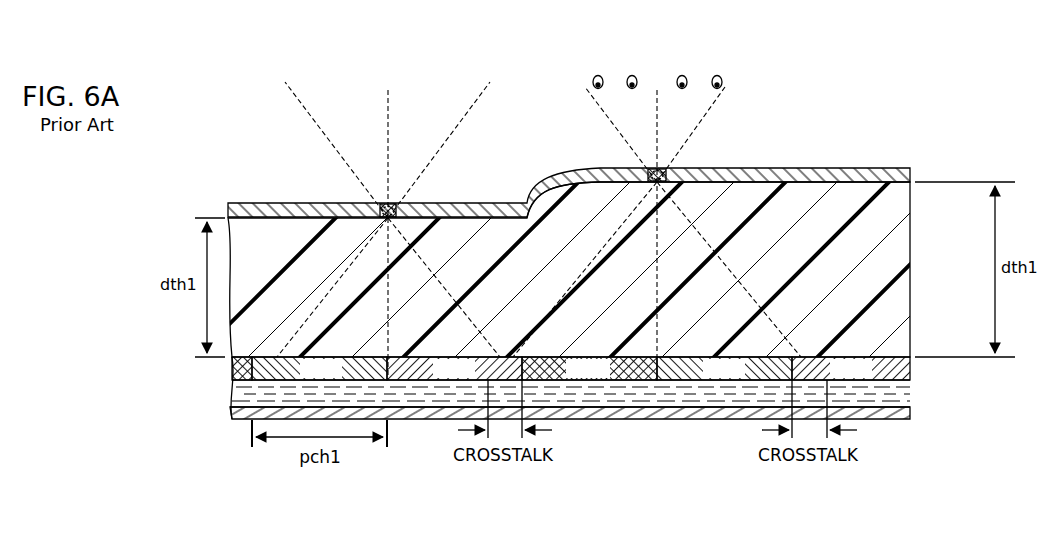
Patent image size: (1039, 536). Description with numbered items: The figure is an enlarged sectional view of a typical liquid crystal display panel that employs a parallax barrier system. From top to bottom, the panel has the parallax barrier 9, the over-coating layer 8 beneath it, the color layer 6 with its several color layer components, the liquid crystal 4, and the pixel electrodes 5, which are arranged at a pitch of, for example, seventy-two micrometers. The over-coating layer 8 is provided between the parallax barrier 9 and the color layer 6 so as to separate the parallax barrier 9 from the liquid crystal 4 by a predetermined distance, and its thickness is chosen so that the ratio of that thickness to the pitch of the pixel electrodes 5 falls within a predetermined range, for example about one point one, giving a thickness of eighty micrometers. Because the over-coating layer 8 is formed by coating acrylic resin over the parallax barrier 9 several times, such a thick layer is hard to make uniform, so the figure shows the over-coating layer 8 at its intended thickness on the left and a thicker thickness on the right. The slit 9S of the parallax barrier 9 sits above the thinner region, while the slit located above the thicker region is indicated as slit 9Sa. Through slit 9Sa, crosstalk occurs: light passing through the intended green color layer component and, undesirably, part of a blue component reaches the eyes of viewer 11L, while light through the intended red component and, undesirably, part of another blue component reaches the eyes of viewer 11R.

The liquid crystal 4 is at (240, 394).
The pixel electrodes 5 is at (912, 412).
The color layer 6 is at (912, 381).
The over-coating layer 8 is at (905, 257).
The parallax barrier 9 is at (912, 173).
The slit 9S is at (385, 211).
The slit 9Sa is at (660, 176).
The viewer 11L is at (615, 67).
The viewer 11R is at (699, 67).